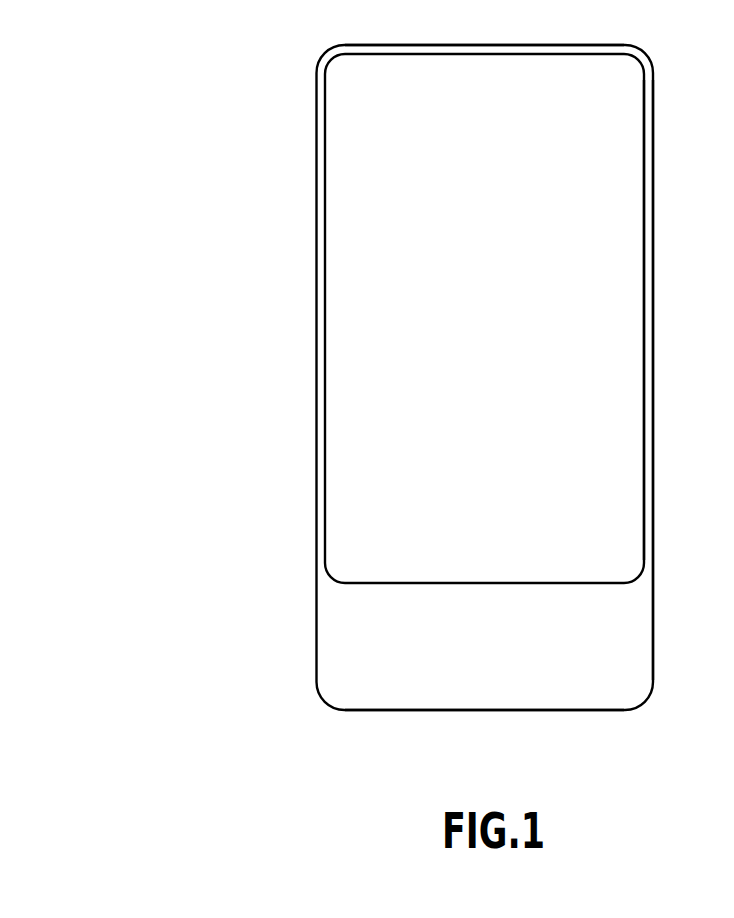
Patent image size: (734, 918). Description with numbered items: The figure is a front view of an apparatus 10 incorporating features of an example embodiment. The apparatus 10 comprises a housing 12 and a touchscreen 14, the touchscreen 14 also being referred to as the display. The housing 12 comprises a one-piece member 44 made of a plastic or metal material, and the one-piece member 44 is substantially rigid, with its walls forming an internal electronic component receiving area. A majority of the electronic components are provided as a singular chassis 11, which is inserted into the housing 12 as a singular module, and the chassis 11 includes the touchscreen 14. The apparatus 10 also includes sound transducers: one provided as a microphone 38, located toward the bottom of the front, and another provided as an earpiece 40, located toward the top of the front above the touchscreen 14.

The apparatus 10 is at (238, 105).
The chassis 11 is at (342, 285).
The housing 12 is at (316, 617).
The touchscreen 14 is at (622, 193).
The microphone 38 is at (572, 710).
The earpiece 40 is at (470, 45).
The one-piece member 44 is at (653, 622).